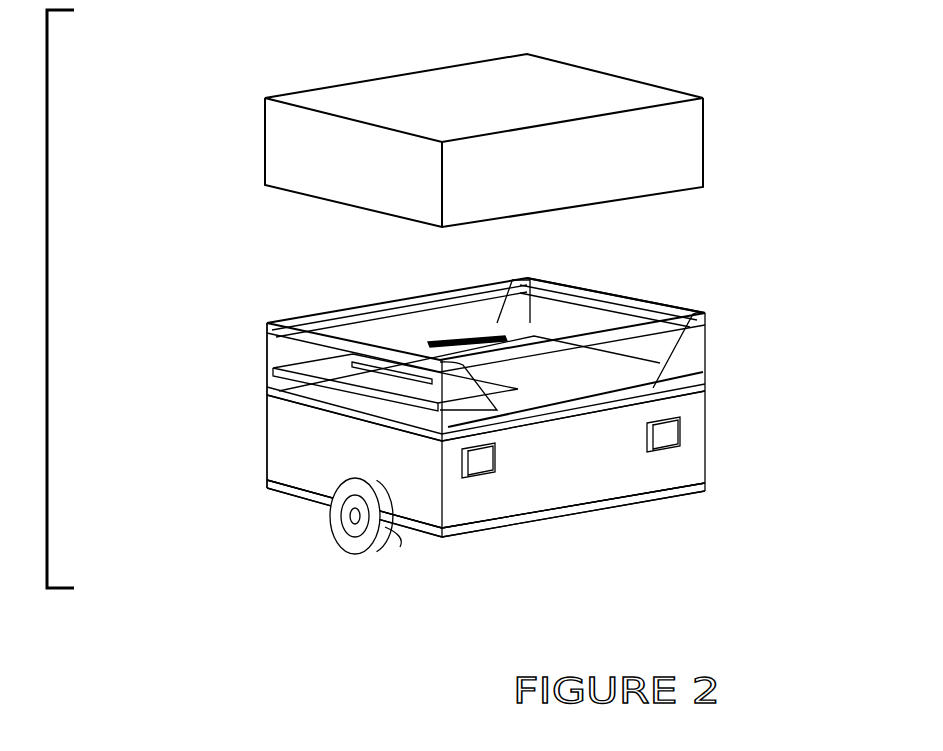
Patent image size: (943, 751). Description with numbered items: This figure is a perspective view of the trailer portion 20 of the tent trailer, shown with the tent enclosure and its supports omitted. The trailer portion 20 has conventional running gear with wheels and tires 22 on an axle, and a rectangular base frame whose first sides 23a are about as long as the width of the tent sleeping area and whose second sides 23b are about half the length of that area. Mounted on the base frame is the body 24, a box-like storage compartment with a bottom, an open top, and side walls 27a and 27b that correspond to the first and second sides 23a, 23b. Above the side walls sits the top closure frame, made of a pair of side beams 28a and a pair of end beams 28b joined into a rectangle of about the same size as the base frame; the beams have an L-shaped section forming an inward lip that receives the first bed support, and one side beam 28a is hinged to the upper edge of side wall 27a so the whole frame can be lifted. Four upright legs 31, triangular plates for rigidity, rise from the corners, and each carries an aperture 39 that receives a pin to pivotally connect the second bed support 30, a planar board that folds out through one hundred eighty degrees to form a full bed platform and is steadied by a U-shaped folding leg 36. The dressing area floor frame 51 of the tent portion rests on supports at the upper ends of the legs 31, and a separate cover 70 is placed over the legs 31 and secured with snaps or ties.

The trailer portion 20 is at (737, 465).
The wheels and tires 22 is at (343, 532).
The first sides of the base frame 23a is at (275, 490).
The second sides of the base frame 23b is at (638, 503).
The body 24 is at (245, 436).
The side wall 27a is at (302, 443).
The side wall 27b is at (523, 490).
The side beams 28a is at (333, 407).
The end beams 28b is at (693, 392).
The second bed support 30 is at (325, 368).
The upright legs 31 is at (695, 342).
The folding leg 36 is at (437, 347).
The aperture 39 is at (448, 413).
The dressing area floor frame 51 is at (613, 297).
The cover 70 is at (313, 156).